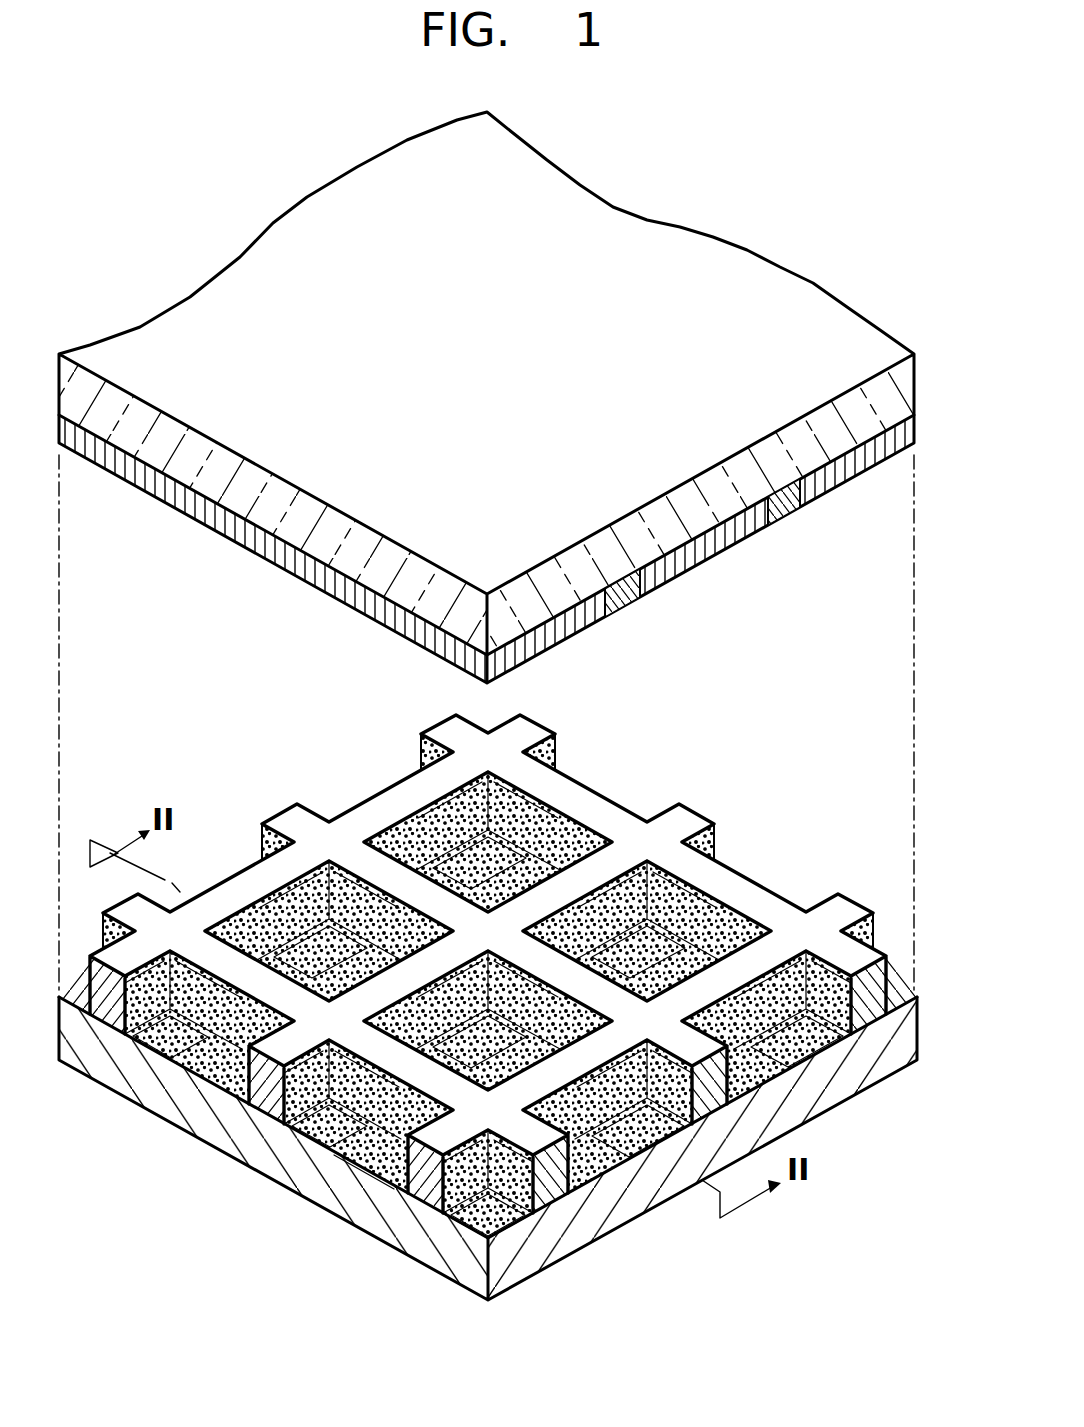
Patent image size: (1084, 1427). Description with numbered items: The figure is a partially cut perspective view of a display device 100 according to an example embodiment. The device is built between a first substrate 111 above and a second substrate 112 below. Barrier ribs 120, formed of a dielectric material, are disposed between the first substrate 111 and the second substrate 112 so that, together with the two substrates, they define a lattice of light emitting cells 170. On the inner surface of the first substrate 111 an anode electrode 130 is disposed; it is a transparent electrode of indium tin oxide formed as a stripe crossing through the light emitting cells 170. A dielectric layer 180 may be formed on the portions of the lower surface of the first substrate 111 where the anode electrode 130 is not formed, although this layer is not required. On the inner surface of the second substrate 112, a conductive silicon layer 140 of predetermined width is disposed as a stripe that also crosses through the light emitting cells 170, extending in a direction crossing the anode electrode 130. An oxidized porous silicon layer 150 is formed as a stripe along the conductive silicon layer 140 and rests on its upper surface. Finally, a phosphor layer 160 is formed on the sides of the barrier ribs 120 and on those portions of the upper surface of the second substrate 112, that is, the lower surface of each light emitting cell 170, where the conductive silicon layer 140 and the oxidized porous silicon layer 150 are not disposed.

The display device 100 is at (172, 234).
The first substrate 111 is at (833, 432).
The second substrate 112 is at (912, 1025).
The barrier ribs 120 is at (556, 1182).
The anode electrode 130 is at (613, 598).
The conductive silicon layer 140 is at (353, 1165).
The oxidized porous silicon layer 150 is at (353, 1150).
The phosphor layer 160 is at (447, 1228).
The light emitting cells 170 is at (678, 908).
The dielectric layer 180 is at (725, 543).